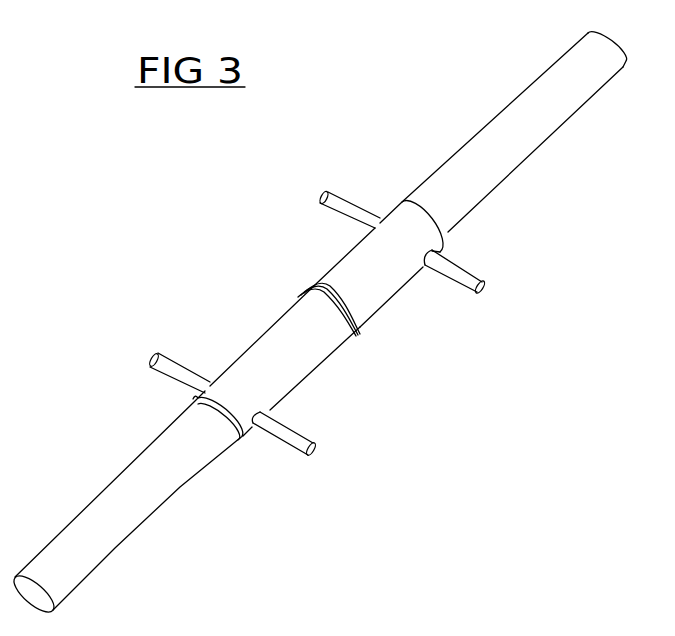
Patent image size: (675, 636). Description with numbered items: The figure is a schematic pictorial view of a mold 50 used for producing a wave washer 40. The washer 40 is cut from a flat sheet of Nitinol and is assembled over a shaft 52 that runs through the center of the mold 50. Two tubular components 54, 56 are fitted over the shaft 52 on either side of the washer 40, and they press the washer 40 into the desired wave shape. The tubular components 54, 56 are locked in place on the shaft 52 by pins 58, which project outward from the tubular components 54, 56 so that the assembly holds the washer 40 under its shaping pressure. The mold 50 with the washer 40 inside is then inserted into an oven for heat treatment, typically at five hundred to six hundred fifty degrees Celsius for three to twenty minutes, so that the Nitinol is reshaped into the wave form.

The mold 50 is at (175, 198).
The shaft 52 is at (507, 145).
The tubular component 54 is at (290, 340).
The tubular component 56 is at (407, 237).
The washer 40 is at (360, 335).
The pins 58 is at (467, 278).